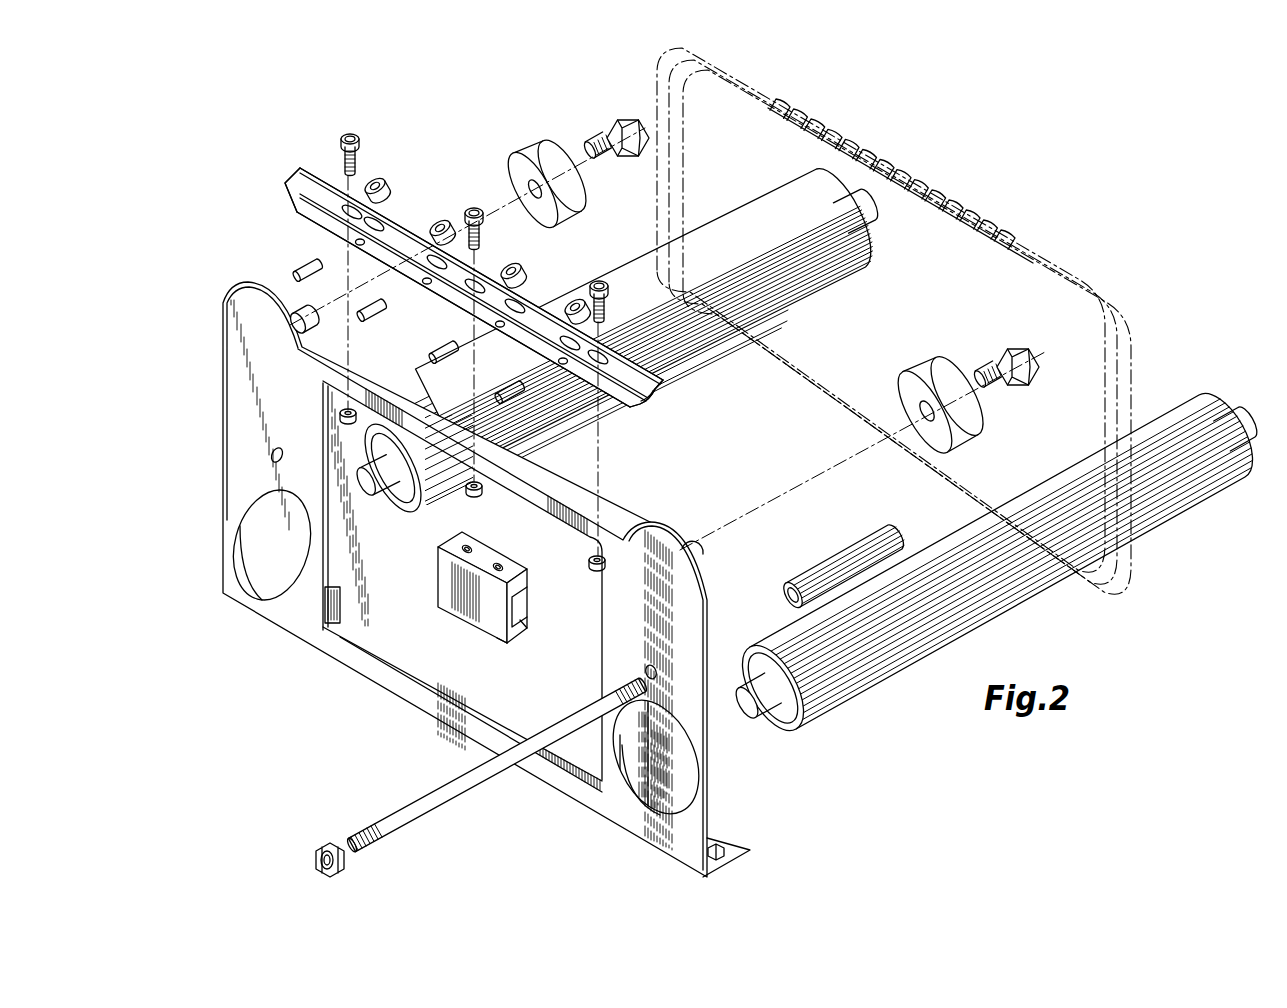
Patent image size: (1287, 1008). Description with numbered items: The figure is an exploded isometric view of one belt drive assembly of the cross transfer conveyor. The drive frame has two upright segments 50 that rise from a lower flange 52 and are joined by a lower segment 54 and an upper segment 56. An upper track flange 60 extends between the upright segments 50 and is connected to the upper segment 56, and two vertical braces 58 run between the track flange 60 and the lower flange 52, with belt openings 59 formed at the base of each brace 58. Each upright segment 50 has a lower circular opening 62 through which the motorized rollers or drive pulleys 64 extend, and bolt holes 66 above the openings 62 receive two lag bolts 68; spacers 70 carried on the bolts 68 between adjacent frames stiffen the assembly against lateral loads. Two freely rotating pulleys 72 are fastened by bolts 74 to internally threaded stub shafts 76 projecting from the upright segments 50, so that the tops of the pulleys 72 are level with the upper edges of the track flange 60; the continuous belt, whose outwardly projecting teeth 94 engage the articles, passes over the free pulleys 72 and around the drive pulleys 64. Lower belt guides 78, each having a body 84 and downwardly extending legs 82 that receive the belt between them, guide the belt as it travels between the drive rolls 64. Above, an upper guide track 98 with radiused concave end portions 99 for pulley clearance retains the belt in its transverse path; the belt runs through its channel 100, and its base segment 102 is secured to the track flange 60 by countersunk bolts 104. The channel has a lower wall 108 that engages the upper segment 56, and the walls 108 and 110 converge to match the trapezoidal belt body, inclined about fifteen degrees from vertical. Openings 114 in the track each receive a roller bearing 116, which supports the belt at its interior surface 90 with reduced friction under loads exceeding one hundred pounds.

The upright segments 50 is at (462, 577).
The lower flange 52 is at (520, 718).
The lower segment 54 is at (405, 665).
The upper segment 56 is at (523, 500).
The vertical braces 58 is at (655, 770).
The belt openings 59 is at (622, 748).
The upper track flange 60 is at (623, 506).
The lower circular opening 62 is at (700, 800).
The drive pulleys 64 is at (1178, 400).
The bolt holes 66 is at (640, 668).
The lag bolts 68 is at (455, 800).
The spacers 70 is at (832, 558).
The freely rotating pulleys 72 is at (908, 378).
The bolts 74 is at (1010, 346).
The stub shafts 76 is at (700, 540).
The lower belt guides 78 is at (484, 610).
The downwardly extending legs 82 is at (530, 625).
The body 84 is at (530, 582).
The interior surface 90 is at (690, 130).
The outwardly projecting teeth 94 is at (915, 160).
The upper guide tracks 98 is at (474, 280).
The radiused concave end portions 99 is at (640, 402).
The channel 100 is at (666, 376).
The base segment 102 is at (660, 402).
The countersunk bolts 104 is at (599, 282).
The channel lower wall 108 is at (283, 186).
The channel side wall 110 is at (306, 168).
The openings 114 is at (515, 292).
The roller bearings 116 is at (574, 292).